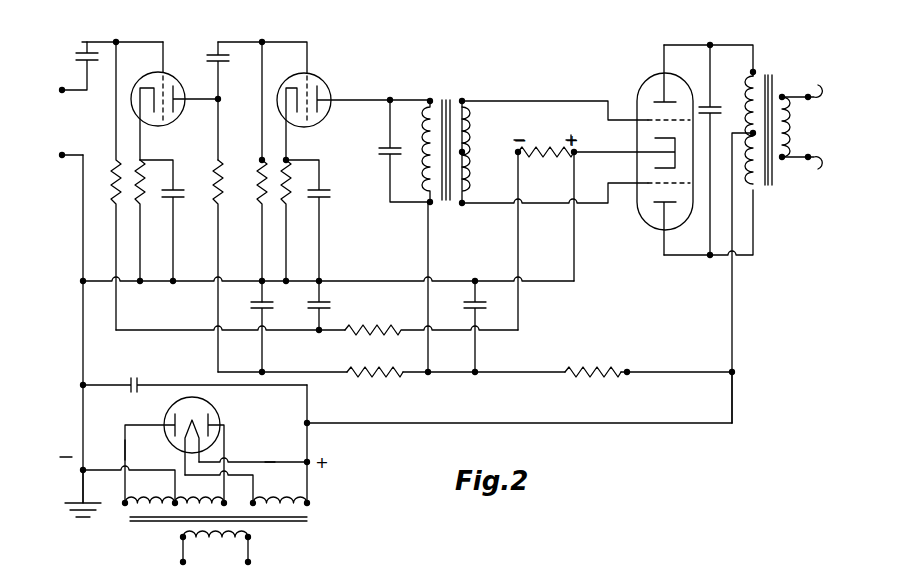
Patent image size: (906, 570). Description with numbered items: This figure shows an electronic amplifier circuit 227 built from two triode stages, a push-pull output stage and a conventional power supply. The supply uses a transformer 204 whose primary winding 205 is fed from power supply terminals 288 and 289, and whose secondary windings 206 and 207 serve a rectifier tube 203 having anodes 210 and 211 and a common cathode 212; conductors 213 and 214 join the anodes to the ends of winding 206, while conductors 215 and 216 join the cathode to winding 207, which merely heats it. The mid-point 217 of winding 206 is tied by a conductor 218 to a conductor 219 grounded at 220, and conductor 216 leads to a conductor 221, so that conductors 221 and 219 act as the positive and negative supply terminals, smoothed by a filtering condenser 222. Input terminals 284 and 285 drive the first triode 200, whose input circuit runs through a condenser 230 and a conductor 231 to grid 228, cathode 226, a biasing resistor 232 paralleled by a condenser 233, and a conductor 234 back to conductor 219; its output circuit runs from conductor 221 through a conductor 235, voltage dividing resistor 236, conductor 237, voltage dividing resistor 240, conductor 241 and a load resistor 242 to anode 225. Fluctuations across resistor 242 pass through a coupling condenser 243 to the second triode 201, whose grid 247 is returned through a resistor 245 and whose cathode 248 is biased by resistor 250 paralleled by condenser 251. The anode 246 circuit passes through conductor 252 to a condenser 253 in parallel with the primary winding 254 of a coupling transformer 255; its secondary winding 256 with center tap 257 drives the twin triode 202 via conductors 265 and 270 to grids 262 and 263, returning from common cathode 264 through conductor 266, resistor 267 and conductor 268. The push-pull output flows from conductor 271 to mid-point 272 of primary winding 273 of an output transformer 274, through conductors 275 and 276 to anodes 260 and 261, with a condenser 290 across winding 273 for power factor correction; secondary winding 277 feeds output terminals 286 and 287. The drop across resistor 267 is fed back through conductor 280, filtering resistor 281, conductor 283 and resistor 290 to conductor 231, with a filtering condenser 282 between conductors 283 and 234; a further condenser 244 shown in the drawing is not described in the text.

The triode 200 is at (172, 73).
The triode 201 is at (322, 84).
The twin triode 202 is at (636, 90).
The rectifier tube 203 is at (214, 406).
The transformer 204 is at (310, 518).
The primary winding 205 is at (238, 548).
The secondary winding 206 is at (170, 490).
The secondary winding 207 is at (279, 490).
The anode 210 is at (165, 421).
The anode 211 is at (212, 422).
The cathode 212 is at (190, 437).
The conductor 213 is at (128, 452).
The conductor 214 is at (228, 444).
The conductor 215 is at (240, 480).
The conductor 216 is at (262, 466).
The mid-point 217 is at (178, 498).
The conductor 218 is at (104, 472).
The conductor 219 is at (82, 357).
The ground 220 is at (80, 505).
The conductor 221 is at (388, 425).
The filtering condenser 222 is at (143, 384).
The anode 225 is at (176, 90).
The cathode 226 is at (143, 79).
The electronic amplifier circuit 227 is at (478, 74).
The grid 228 is at (168, 125).
The condenser 230 is at (84, 54).
The conductor 231 is at (147, 42).
The biasing resistor 232 is at (143, 191).
The condenser 233 is at (184, 177).
The conductor 234 is at (190, 292).
The conductor 235 is at (652, 376).
The voltage dividing resistor 236 is at (582, 376).
The conductor 237 is at (443, 376).
The voltage dividing resistor 240 is at (372, 376).
The conductor 241 is at (216, 372).
The load resistor 242 is at (221, 172).
The coupling condenser 243 is at (229, 101).
The capacitor 244 is at (250, 305).
The resistor 245 is at (254, 198).
The anode 246 is at (322, 110).
The grid 247 is at (311, 126).
The cathode 248 is at (290, 82).
The biasing resistor 250 is at (290, 190).
The condenser 251 is at (322, 190).
The conductor 252 is at (430, 252).
The condenser 253 is at (380, 160).
The primary winding 254 is at (420, 135).
The coupling transformer 255 is at (448, 208).
The secondary winding 256 is at (472, 130).
The mid-point 257 is at (470, 158).
The anode 260 is at (670, 98).
The anode 261 is at (648, 212).
The control grid 262 is at (650, 124).
The control grid 263 is at (686, 191).
The cathode 264 is at (634, 152).
The conductor 265 is at (528, 101).
The conductor 266 is at (582, 146).
The resistor 267 is at (545, 147).
The conductor 268 is at (508, 142).
The conductor 270 is at (546, 208).
The conductor 271 is at (733, 289).
The mid-point 272 is at (740, 133).
The primary winding 273 is at (733, 127).
The transformer 274 is at (770, 189).
The conductor 275 is at (730, 45).
The conductor 276 is at (690, 258).
The secondary winding 277 is at (792, 120).
The conductor 280 is at (500, 334).
The filtering resistor 281 is at (350, 333).
The filtering condenser 282 is at (332, 292).
The conductor 283 is at (174, 332).
The input terminal 284 is at (63, 92).
The input terminal 285 is at (63, 153).
The output terminal 286 is at (801, 85).
The output terminal 287 is at (801, 171).
The power supply terminal 288 is at (182, 562).
The power supply terminal 289 is at (250, 562).
The condenser 290 is at (112, 193).